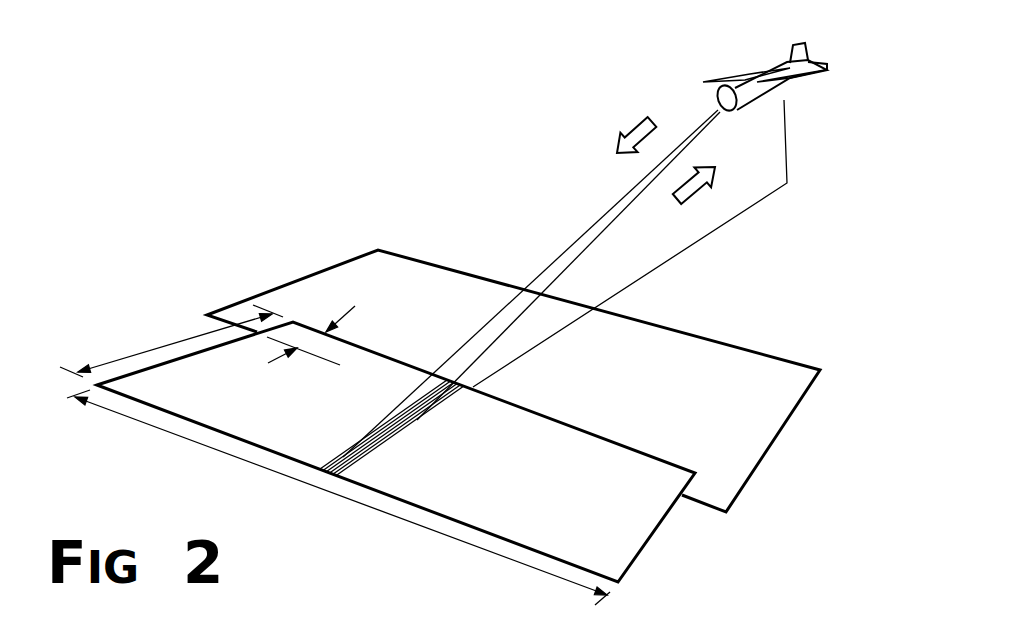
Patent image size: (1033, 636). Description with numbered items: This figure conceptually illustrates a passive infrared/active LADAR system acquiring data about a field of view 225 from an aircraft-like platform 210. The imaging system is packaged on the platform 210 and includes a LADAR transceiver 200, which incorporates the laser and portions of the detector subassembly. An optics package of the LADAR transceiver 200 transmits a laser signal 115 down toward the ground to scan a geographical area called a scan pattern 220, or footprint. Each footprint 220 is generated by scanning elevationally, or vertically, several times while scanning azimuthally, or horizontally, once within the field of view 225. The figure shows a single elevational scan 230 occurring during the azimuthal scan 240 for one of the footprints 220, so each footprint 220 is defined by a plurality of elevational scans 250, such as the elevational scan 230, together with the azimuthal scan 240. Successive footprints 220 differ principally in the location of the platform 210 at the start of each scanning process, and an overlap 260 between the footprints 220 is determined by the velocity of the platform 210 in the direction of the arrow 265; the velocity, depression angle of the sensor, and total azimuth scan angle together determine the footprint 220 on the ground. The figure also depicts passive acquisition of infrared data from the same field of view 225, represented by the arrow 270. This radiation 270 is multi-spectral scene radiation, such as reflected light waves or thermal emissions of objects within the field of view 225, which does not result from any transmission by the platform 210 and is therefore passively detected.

The laser signal 115 is at (552, 270).
The LADAR transceiver 200 is at (718, 97).
The platform 210 is at (755, 69).
The scan pattern 220 is at (664, 396).
The field of view 225 is at (411, 200).
The elevational scan 230 is at (418, 422).
The azimuthal scan 240 is at (338, 497).
The elevational scans 250 is at (171, 341).
The overlap 260 is at (331, 332).
The arrow 265 is at (625, 137).
The arrow 270 is at (715, 173).